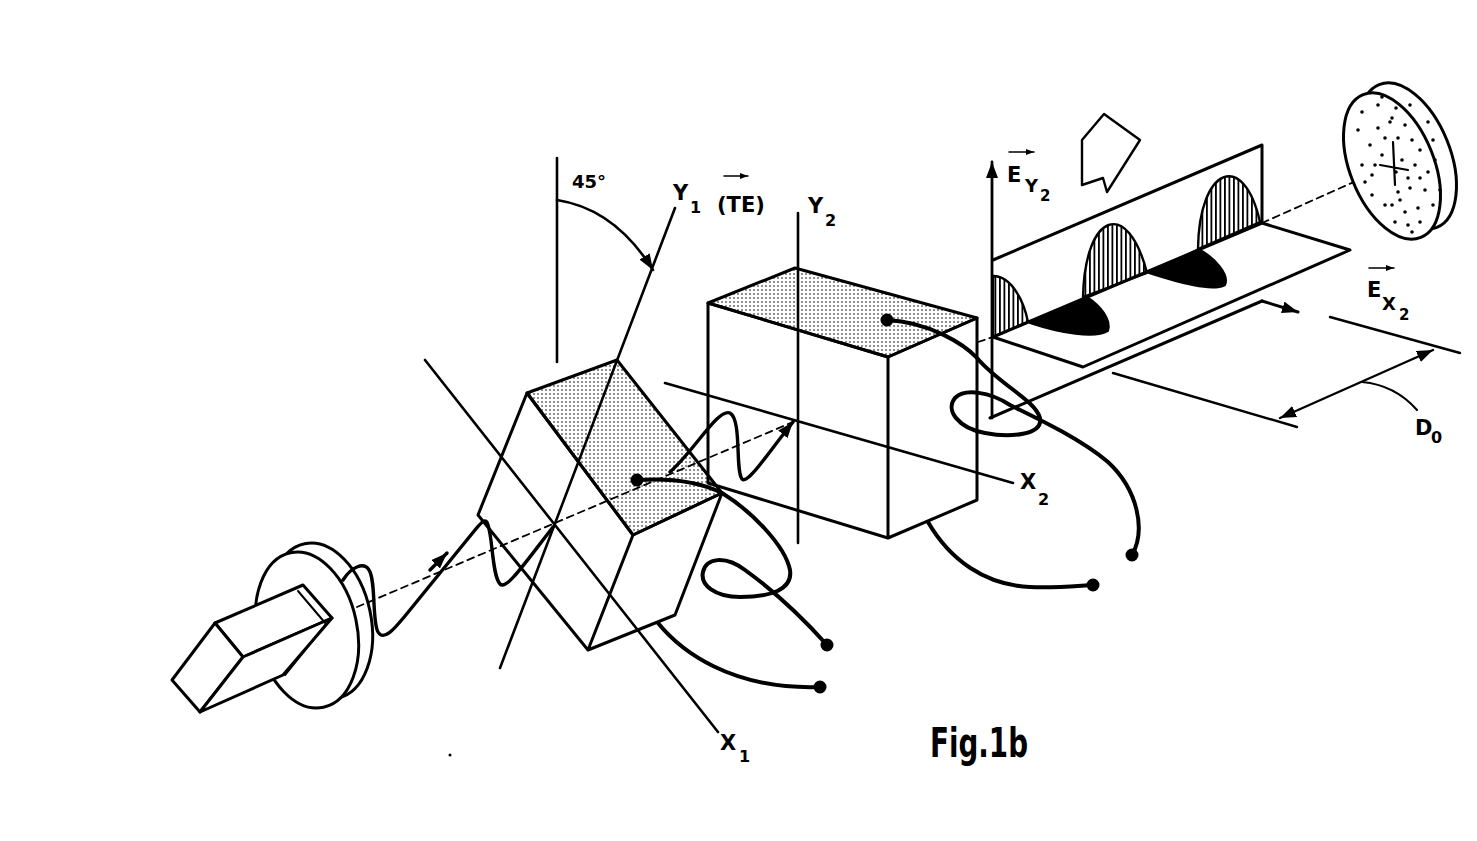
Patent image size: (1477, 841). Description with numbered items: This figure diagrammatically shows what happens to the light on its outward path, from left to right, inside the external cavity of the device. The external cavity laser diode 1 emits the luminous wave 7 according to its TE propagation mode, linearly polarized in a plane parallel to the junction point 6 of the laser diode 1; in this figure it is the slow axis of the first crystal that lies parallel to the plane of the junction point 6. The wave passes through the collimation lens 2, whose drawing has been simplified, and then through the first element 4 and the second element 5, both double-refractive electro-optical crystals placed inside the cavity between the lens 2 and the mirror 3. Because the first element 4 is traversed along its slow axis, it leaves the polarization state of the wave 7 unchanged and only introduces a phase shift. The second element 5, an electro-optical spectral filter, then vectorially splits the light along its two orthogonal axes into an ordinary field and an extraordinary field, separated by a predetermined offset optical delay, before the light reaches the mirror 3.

The external cavity laser diode 1 is at (250, 622).
The collimation lens 2 is at (328, 693).
The mirror 3 is at (1360, 118).
The first element 4 is at (528, 420).
The second element 5 is at (878, 288).
The junction point 6 is at (183, 690).
The luminous wave 7 is at (457, 543).